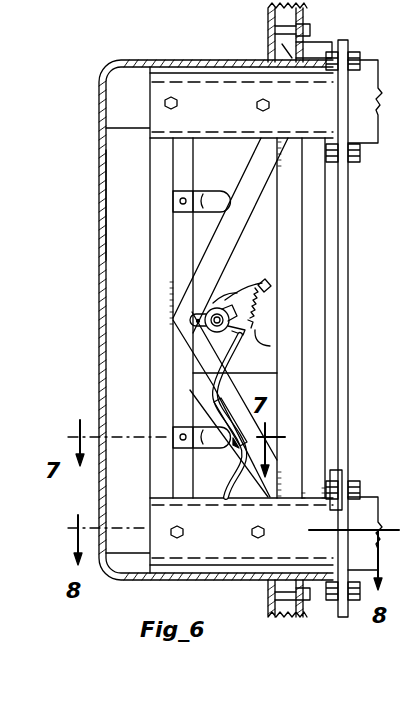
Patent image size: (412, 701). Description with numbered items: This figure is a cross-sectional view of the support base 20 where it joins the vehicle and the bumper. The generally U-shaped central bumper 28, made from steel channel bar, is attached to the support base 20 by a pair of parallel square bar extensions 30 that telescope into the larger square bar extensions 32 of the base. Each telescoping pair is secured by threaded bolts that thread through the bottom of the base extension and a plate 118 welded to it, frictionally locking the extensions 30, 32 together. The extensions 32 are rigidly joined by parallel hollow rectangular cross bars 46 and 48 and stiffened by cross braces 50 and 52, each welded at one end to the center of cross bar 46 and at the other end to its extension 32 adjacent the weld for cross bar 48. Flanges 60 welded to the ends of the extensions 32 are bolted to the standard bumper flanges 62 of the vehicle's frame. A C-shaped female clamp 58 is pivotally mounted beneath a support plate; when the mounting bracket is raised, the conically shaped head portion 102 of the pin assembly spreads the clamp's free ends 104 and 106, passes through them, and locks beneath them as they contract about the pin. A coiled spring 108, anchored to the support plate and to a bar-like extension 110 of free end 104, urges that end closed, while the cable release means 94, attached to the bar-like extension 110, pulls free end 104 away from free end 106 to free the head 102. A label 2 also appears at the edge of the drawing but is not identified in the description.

The apparatus 2 is at (405, 367).
The support base 20 is at (290, 228).
The central bumper 28 is at (99, 200).
The square bar extensions 30 is at (147, 92).
The square bar extensions 32 is at (203, 60).
The cross bar 46 is at (170, 170).
The cross bar 48 is at (300, 188).
The cross brace 50 is at (254, 152).
The cross brace 52 is at (253, 468).
The C-shaped female clamp 58 is at (215, 300).
The flanges 60 is at (303, 47).
The standard bumper flanges 62 is at (344, 40).
The cable release means 94 is at (227, 372).
The head portion 102 is at (232, 300).
The free end 104 is at (207, 346).
The free end 106 is at (267, 283).
The coiled spring 108 is at (262, 308).
The bar-like extension 110 is at (253, 347).
The plate 118 is at (166, 95).